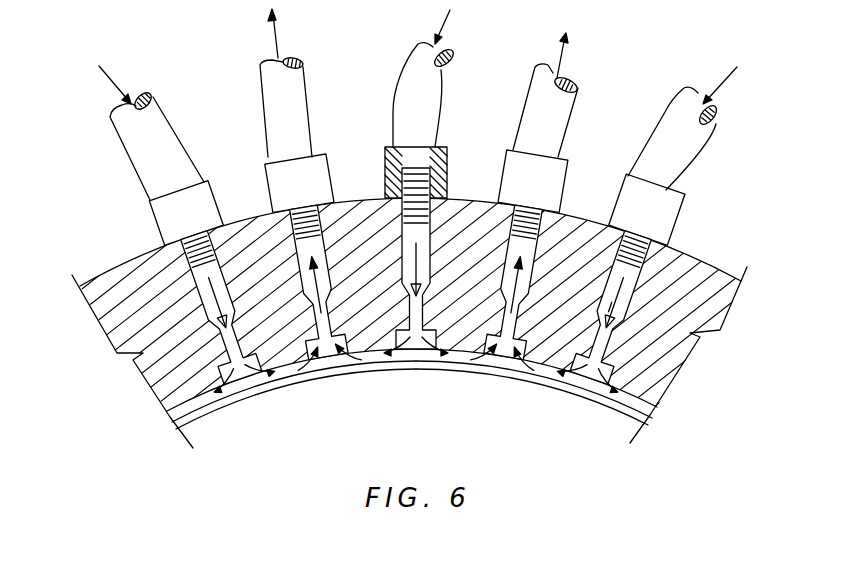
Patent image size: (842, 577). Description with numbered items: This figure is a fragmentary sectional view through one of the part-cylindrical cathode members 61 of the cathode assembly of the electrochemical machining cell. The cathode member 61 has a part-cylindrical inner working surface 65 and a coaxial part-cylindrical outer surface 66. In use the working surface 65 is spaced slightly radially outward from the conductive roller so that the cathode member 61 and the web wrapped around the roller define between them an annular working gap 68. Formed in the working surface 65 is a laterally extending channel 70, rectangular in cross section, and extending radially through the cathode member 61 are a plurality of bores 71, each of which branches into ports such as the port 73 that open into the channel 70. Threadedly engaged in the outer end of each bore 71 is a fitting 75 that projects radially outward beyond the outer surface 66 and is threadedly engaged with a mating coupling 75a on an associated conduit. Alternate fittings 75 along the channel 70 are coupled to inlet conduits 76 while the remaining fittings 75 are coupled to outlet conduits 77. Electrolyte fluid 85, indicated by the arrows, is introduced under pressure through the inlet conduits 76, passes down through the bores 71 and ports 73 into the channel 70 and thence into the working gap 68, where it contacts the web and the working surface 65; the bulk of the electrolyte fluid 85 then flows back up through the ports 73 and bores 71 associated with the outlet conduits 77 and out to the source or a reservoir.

The cathode member 61 is at (137, 278).
The working surface 65 is at (648, 415).
The outer surface 66 is at (705, 266).
The working gap 68 is at (172, 419).
The channel 70 is at (564, 380).
The bore 71 is at (621, 280).
The port 73 is at (598, 341).
The fitting 75 is at (500, 197).
The mating coupling 75a is at (636, 156).
The inlet conduit 76 is at (122, 145).
The outlet conduit 77 is at (262, 92).
The electrolyte fluid 85 is at (99, 66).